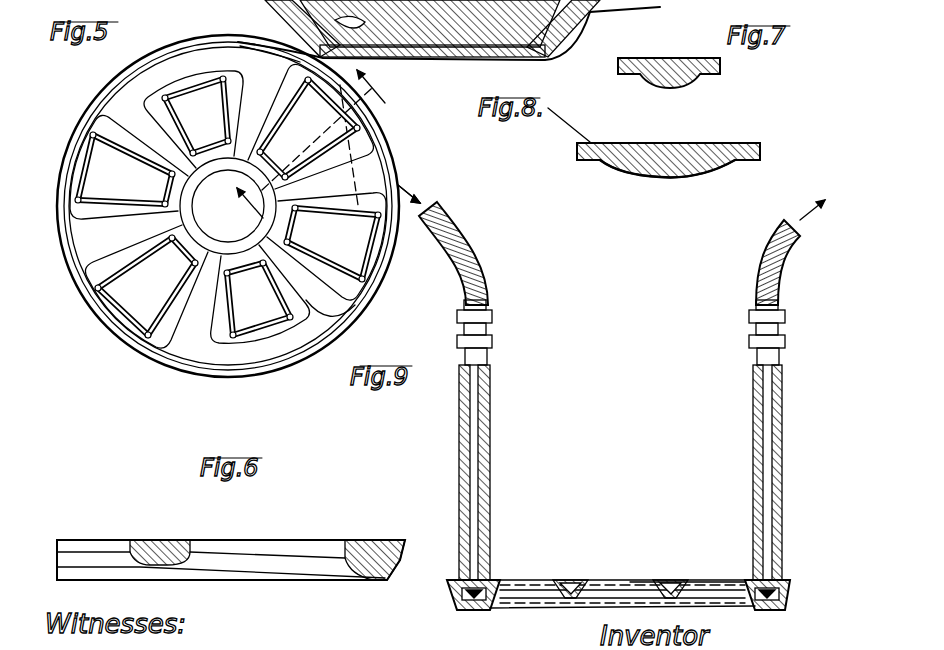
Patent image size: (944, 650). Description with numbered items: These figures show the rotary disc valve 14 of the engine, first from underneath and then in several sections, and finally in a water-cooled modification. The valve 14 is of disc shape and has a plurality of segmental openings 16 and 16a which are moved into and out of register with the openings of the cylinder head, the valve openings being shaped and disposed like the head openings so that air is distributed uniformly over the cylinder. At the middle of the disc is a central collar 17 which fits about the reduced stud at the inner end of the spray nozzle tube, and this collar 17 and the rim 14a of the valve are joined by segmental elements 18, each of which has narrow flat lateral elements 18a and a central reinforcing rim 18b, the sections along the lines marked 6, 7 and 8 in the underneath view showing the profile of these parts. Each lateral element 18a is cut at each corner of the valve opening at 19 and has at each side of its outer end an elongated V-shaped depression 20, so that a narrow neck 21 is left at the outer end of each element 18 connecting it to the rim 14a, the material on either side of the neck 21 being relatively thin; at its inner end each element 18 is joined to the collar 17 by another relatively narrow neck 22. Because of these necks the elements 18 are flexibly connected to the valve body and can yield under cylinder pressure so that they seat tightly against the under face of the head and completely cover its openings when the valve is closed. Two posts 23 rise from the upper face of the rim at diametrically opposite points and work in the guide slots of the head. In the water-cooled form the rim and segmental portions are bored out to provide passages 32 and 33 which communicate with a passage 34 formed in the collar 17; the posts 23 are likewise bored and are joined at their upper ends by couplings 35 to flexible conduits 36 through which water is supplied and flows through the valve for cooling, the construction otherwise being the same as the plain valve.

In FIG. 5, the section line 6— 6 is at (300, 159).
In FIG. 5, the section line 7— 7 is at (285, 163).
In FIG. 5, the section line 8— 8 is at (343, 179).
In FIG. 5, the valve 14 is at (182, 375).
In FIG. 5, the rim 14a is at (92, 302).
In FIG. 5, the segmental opening 16 is at (140, 310).
In FIG. 5, the segmental opening 16a is at (263, 317).
In FIG. 5, the central collar 17 is at (270, 200).
In FIG. 6, the central collar 17 is at (140, 540).
In FIG. 9, the central collar 17 is at (645, 590).
In FIG. 5, the segmental element 18 is at (160, 384).
In FIG. 5, the lateral element 18a is at (330, 312).
In FIG. 8, the lateral element 18a is at (585, 163).
In FIG. 5, the central reinforcing rim 18b is at (352, 300).
In FIG. 7, the central reinforcing rim 18b is at (690, 86).
In FIG. 8, the central reinforcing rim 18b is at (680, 173).
In FIG. 5, the cut 19 is at (150, 333).
In FIG. 5, the depression 20 is at (83, 280).
In FIG. 5, the neck 21 is at (77, 250).
In FIG. 5, the neck 22 is at (172, 224).
In FIG. 9, the post 23 is at (490, 447).
In FIG. 9, the passage 32 is at (467, 612).
In FIG. 9, the passage 33 is at (515, 590).
In FIG. 9, the passage 34 is at (570, 590).
In FIG. 9, the coupling 35 is at (492, 316).
In FIG. 9, the flexible conduit 36 is at (488, 267).